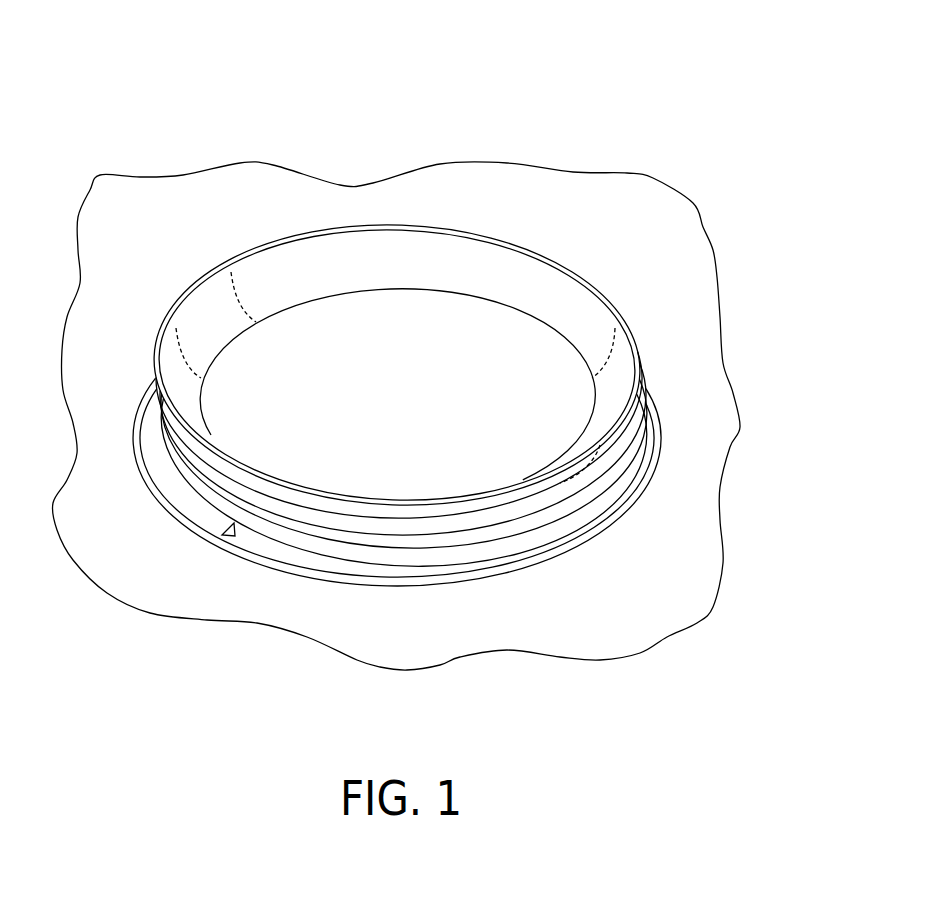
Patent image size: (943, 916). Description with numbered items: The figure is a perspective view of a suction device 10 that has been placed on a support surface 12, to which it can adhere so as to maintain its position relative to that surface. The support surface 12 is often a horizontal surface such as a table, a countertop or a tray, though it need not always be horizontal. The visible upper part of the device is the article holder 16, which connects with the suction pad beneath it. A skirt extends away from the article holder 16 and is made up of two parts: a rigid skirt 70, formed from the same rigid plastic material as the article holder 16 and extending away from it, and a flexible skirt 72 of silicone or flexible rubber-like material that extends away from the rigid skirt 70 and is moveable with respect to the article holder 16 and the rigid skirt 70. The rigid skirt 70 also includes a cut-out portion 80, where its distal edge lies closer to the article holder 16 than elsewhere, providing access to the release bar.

The suction device 10 is at (405, 368).
The support surface 12 is at (693, 272).
The article holder 16 is at (552, 258).
The rigid skirt 70 is at (397, 538).
The flexible skirt 72 is at (383, 579).
The cut-out portion 80 is at (212, 500).